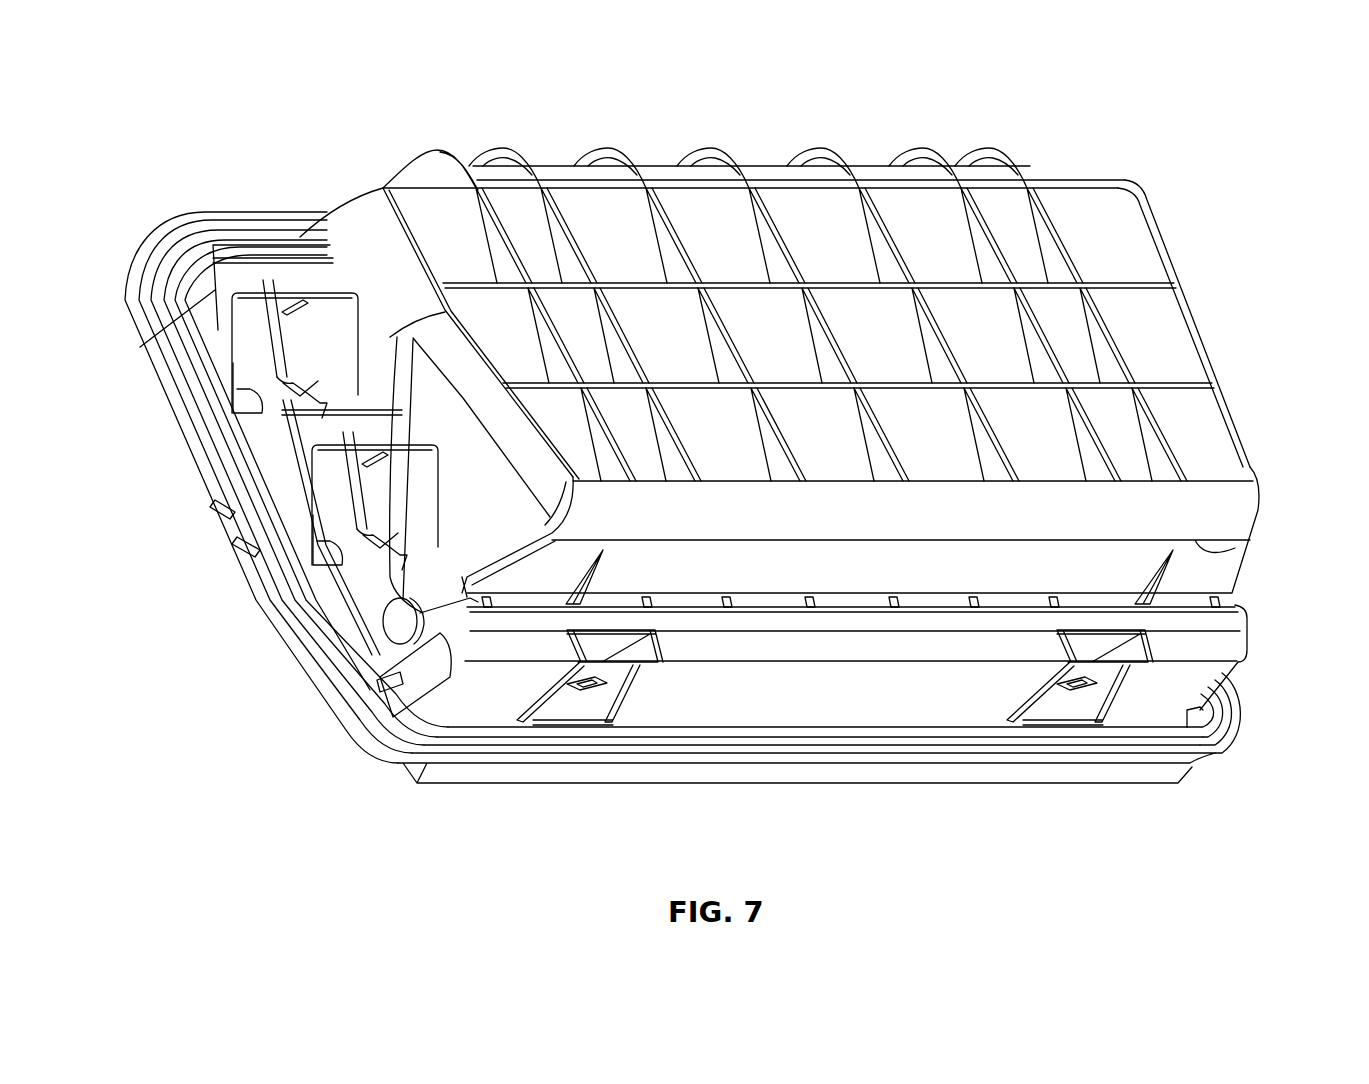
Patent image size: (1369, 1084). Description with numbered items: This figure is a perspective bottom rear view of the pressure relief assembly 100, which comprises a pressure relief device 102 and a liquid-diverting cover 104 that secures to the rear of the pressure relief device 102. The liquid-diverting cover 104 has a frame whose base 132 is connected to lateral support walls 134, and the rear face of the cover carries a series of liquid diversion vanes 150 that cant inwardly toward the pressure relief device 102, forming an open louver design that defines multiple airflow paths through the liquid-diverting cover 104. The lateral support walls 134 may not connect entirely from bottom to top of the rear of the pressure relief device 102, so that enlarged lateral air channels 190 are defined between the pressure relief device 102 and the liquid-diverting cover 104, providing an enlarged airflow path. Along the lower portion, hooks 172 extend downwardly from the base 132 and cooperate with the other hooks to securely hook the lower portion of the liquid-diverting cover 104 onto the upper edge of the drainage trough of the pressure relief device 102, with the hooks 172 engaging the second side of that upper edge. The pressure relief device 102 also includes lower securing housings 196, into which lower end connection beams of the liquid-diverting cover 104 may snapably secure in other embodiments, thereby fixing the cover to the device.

The pressure relief assembly 100 is at (182, 118).
The pressure relief device 102 is at (170, 428).
The liquid-diverting cover 104 is at (1177, 262).
The base 132 is at (1200, 545).
The lateral support walls 134 is at (1245, 447).
The liquid diversion vanes 150 is at (1117, 220).
The hooks 172 is at (682, 612).
The lateral air channels 190 is at (352, 320).
The lower securing housings 196 is at (585, 690).